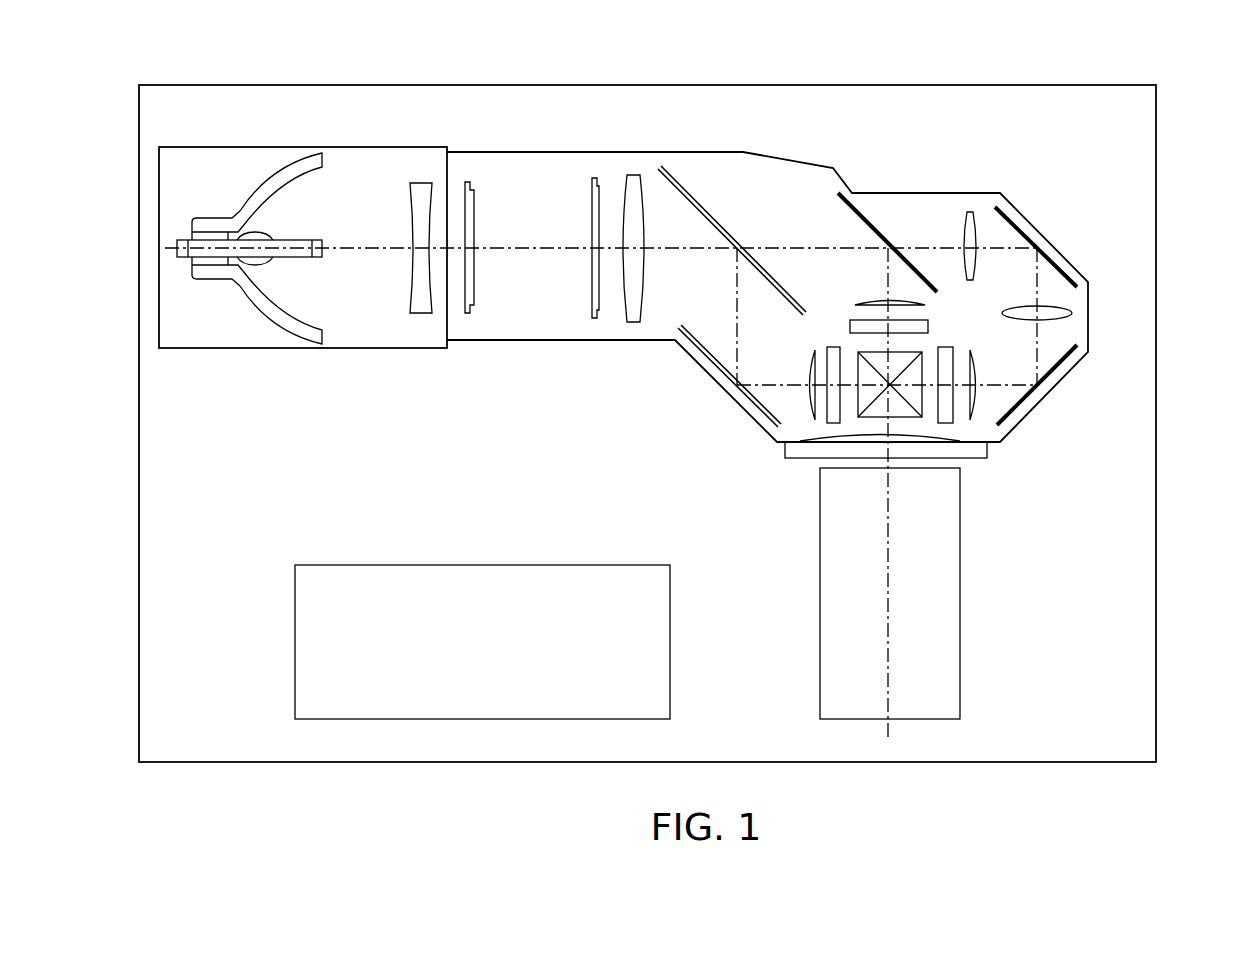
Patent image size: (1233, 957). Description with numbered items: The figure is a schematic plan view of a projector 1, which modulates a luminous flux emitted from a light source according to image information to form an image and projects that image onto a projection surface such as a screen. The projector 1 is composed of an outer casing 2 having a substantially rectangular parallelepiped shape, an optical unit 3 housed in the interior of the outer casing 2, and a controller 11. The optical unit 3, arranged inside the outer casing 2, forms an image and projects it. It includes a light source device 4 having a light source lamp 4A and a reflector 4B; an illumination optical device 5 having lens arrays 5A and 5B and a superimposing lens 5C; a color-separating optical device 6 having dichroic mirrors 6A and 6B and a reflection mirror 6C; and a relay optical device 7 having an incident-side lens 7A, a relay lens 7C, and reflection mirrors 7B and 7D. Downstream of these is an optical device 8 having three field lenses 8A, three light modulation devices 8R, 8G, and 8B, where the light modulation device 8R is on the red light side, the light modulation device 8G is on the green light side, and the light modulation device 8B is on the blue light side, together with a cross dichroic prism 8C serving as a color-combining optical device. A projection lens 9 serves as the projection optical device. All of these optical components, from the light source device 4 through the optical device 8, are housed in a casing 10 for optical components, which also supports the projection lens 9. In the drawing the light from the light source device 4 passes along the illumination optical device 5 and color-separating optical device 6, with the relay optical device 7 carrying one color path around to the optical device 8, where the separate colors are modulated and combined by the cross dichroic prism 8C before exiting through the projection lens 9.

The projector 1 is at (248, 86).
The outer casing 2 is at (1158, 328).
The optical unit 3 is at (426, 414).
The light source device 4 is at (303, 292).
The light source lamp 4A is at (272, 262).
The reflector 4B is at (281, 273).
The illumination optical device 5 is at (558, 304).
The lens array 5A is at (467, 314).
The lens array 5B is at (595, 319).
The superimposing lens 5C is at (637, 283).
The color-separating optical device 6 is at (804, 187).
The dichroic mirror 6A is at (707, 211).
The dichroic mirror 6B is at (870, 215).
The reflection mirror 6C is at (721, 382).
The relay optical device 7 is at (1069, 297).
The incident-side lens 7A is at (970, 212).
The reflection mirror 7B is at (1052, 262).
The relay lens 7C is at (1070, 317).
The reflection mirror 7D is at (1058, 366).
The optical device 8 is at (834, 303).
The field lens 8A is at (868, 301).
The light modulation device 8B is at (830, 416).
The cross dichroic prism 8C is at (898, 412).
The light modulation device 8G is at (930, 325).
The light modulation device 8R is at (950, 413).
The projection lens 9 is at (947, 646).
The casing for optical component 10 is at (626, 152).
The controller 11 is at (459, 565).